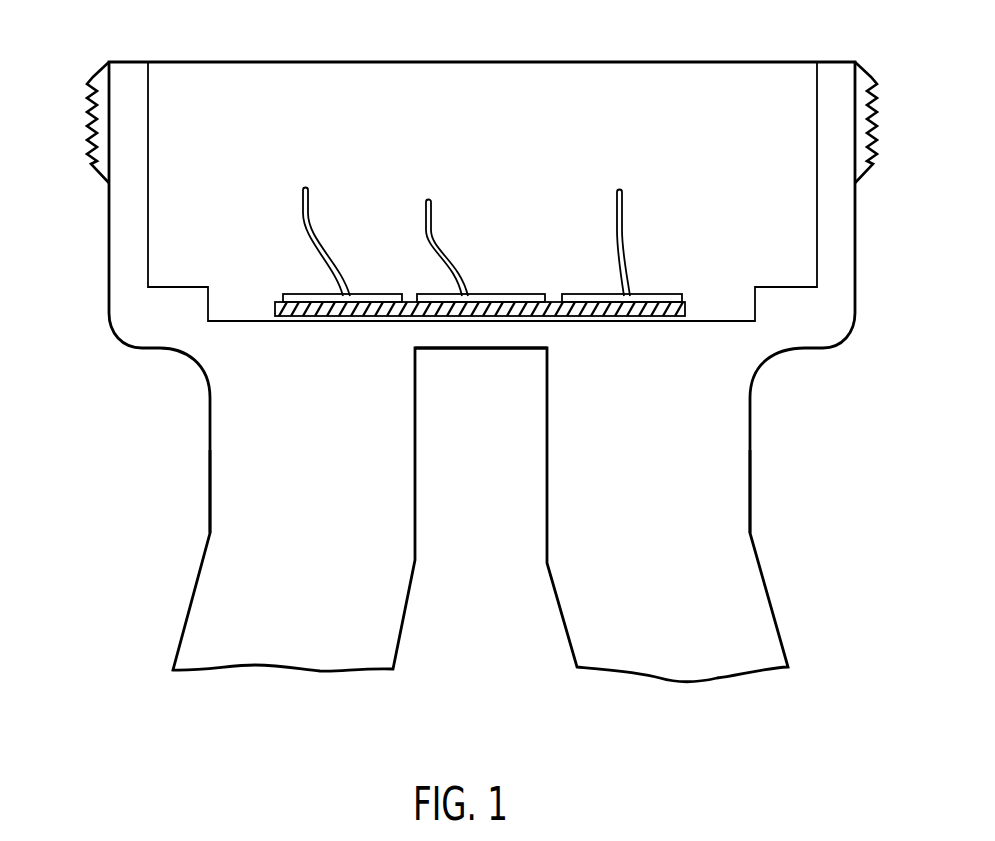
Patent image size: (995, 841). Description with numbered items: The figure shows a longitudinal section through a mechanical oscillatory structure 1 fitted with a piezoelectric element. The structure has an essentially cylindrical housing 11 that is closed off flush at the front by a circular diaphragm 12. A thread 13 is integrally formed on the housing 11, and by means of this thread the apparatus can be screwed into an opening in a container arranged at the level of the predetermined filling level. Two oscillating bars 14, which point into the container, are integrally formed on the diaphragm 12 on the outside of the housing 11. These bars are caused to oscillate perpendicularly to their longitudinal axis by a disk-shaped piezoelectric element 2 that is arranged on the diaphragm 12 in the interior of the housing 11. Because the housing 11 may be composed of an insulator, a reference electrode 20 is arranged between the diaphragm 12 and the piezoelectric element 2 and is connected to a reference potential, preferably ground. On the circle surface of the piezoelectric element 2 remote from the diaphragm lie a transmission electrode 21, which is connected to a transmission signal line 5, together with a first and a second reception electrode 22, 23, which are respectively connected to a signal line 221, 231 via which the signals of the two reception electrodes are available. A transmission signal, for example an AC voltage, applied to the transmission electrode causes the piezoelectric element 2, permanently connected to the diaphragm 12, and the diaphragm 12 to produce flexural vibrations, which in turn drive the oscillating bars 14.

The mechanical oscillatory structure 1 is at (162, 420).
The housing 11 is at (123, 260).
The diaphragm 12 is at (468, 320).
The thread 13 is at (870, 145).
The oscillating bars 14 is at (244, 499).
The piezoelectric element 2 is at (685, 306).
The reference electrode 20 is at (530, 318).
The transmission electrode 21 is at (525, 294).
The first reception electrode 22 is at (307, 296).
The second reception electrode 23 is at (660, 294).
The signal line 221 is at (303, 220).
The signal line 231 is at (628, 222).
The transmission signal line 5 is at (438, 232).